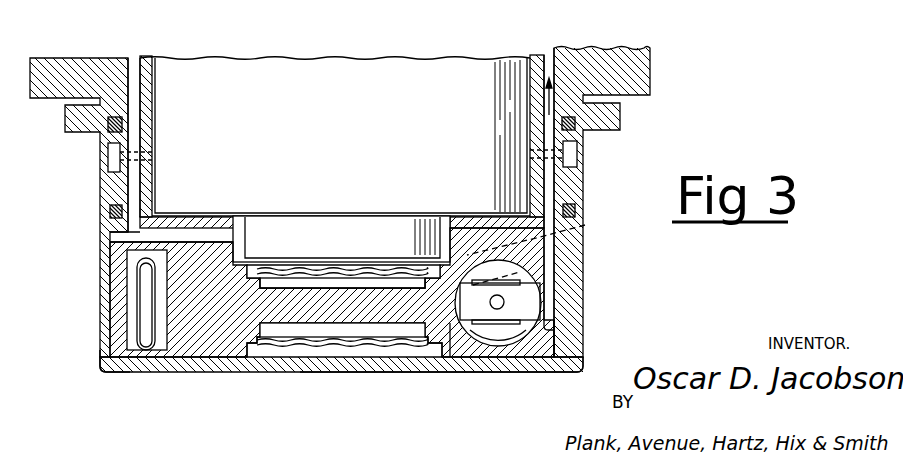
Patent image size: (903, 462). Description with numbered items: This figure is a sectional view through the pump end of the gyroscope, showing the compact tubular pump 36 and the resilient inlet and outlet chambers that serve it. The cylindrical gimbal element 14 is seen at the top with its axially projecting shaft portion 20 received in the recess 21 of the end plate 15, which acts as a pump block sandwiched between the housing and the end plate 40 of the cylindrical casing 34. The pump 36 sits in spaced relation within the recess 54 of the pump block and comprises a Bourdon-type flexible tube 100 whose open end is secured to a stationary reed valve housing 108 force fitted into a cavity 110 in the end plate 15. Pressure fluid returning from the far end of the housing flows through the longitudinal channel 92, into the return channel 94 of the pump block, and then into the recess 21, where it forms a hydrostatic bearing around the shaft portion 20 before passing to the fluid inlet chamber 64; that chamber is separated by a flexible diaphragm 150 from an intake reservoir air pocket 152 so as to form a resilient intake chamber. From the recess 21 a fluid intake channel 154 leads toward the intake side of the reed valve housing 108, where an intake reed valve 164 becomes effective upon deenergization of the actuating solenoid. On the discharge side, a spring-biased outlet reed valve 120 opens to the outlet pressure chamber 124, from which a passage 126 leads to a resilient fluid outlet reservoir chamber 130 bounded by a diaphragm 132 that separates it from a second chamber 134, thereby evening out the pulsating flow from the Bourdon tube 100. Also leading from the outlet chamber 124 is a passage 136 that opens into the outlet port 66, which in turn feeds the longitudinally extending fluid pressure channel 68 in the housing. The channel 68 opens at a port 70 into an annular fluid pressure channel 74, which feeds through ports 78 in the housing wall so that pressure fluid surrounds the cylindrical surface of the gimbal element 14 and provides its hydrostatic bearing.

The cylindrical gimbal element 14 is at (325, 142).
The end plate 15 is at (165, 374).
The shaft portion 20 is at (340, 225).
The recess 21 is at (265, 228).
The cylindrical casing 34 is at (106, 326).
The tubular pump 36 is at (118, 375).
The end plate 40 is at (395, 378).
The recess 54 is at (125, 340).
The fluid inlet chamber 64 is at (415, 232).
The outlet port 66 is at (548, 298).
The fluid pressure channel 68 is at (550, 190).
The port 70 is at (580, 142).
The annular fluid pressure channel 74 is at (112, 152).
The port 78 is at (152, 145).
The channel 92 is at (135, 78).
The return channel 94 is at (130, 236).
The flexible tube 100 is at (135, 298).
The stationary reed valve housing 108 is at (510, 338).
The cavity 110 is at (510, 266).
The outlet reed valve 120 is at (535, 346).
The outlet pressure chamber 124 is at (490, 344).
The passage 126 is at (467, 336).
The resilient fluid outlet reservoir chamber 130 is at (338, 337).
The diaphragm 132 is at (263, 367).
The second chamber 134 is at (325, 352).
The passage 136 is at (560, 325).
The flexible diaphragm 150 is at (383, 228).
The intake reservoir air pocket 152 is at (318, 286).
The fluid intake channel 154 is at (585, 225).
The reed valve 164 is at (545, 283).